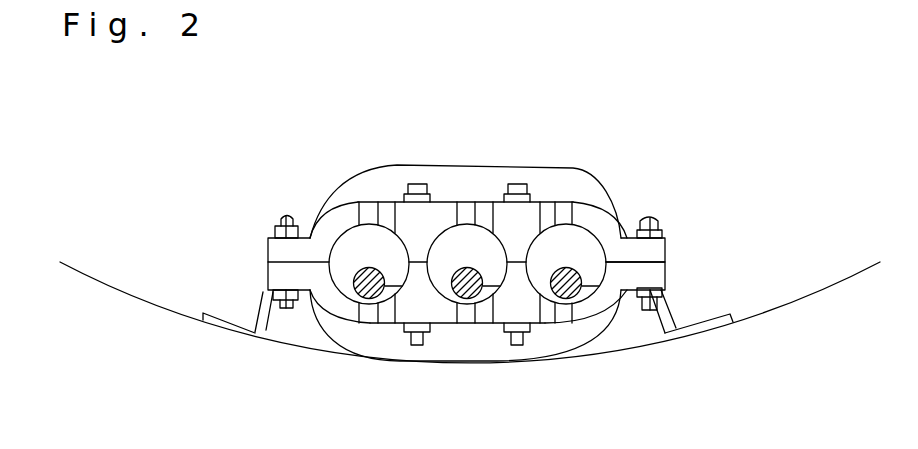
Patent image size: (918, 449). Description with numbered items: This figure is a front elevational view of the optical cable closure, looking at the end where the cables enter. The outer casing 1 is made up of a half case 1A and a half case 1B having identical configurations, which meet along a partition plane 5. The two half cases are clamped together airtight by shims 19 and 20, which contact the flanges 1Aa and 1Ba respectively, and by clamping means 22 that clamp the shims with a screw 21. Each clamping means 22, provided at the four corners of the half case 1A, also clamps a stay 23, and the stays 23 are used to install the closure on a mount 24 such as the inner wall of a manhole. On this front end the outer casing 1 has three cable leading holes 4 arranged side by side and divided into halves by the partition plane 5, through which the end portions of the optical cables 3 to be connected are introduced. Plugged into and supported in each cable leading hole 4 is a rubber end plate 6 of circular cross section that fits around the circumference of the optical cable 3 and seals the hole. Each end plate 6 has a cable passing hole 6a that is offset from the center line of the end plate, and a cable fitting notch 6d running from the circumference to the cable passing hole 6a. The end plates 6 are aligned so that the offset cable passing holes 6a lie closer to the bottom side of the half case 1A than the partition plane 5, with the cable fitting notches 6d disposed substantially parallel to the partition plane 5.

The outer casing 1 is at (485, 248).
The half case 1A is at (508, 337).
The half case 1B is at (483, 164).
The flange 1Aa is at (650, 277).
The flange 1Ba is at (650, 252).
The optical cable 3 is at (357, 298).
The cable leading hole 4 is at (303, 297).
The partition plane 5 is at (292, 262).
The rubber end plate 6 is at (352, 238).
The cable passing hole 6a is at (352, 297).
The cable fitting notch 6d is at (387, 295).
The shim 19 is at (666, 234).
The shim 20 is at (628, 300).
The screw 21 is at (641, 228).
The clamping means 22 is at (276, 215).
The stay 23 is at (227, 326).
The mount 24 is at (96, 278).